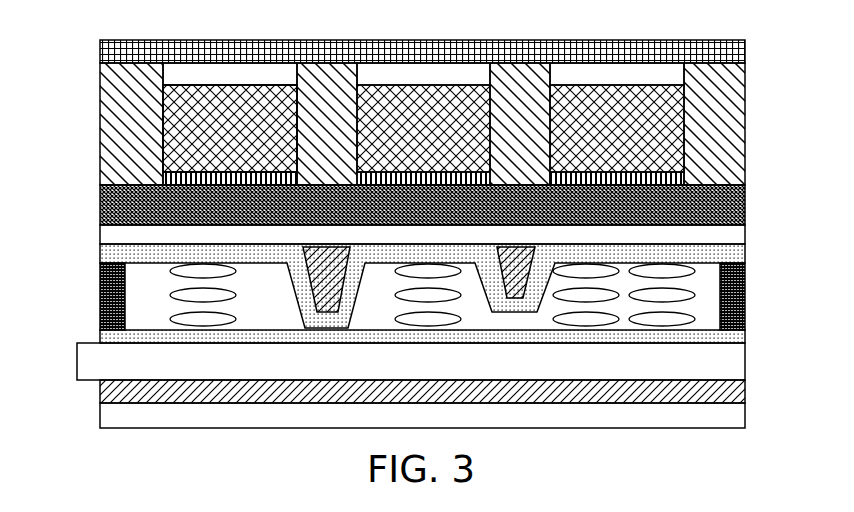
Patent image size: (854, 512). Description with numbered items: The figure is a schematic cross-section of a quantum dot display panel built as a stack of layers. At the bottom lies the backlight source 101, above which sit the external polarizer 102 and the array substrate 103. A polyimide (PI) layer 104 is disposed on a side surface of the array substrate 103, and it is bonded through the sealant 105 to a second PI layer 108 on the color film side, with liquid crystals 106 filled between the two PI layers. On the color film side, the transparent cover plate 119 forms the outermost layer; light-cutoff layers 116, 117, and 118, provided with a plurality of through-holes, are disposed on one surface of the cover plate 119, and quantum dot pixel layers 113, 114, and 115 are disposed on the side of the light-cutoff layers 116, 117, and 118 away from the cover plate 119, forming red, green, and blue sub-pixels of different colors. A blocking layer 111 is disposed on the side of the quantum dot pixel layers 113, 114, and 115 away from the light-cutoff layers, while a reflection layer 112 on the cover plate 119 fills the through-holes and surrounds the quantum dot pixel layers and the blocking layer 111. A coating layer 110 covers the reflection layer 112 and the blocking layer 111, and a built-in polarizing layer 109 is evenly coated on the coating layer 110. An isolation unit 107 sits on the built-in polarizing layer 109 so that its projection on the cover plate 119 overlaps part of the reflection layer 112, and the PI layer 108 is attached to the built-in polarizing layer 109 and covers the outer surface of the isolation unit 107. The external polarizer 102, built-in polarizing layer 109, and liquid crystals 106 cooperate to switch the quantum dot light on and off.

The backlight source 101 is at (704, 420).
The external polarizer 102 is at (705, 395).
The array substrate 103 is at (703, 363).
The polyimide (PI) layer 104 is at (727, 333).
The sealant 105 is at (100, 300).
The liquid crystals 106 is at (690, 292).
The isolation unit 107 is at (330, 305).
The polyimide (PI) layer 108 is at (705, 257).
The built-in polarizing layer 109 is at (704, 237).
The coating layer 110 is at (746, 191).
The blocking layer 111 is at (148, 178).
The reflection layer 112 is at (153, 112).
The quantum dot pixel layer 113 is at (637, 135).
The quantum dot pixel layer 114 is at (252, 172).
The quantum dot pixel layer 115 is at (185, 138).
The light-cutoff layer 116 is at (632, 77).
The light-cutoff layer 117 is at (436, 76).
The light-cutoff layer 118 is at (276, 75).
The transparent cover plate 119 is at (714, 52).